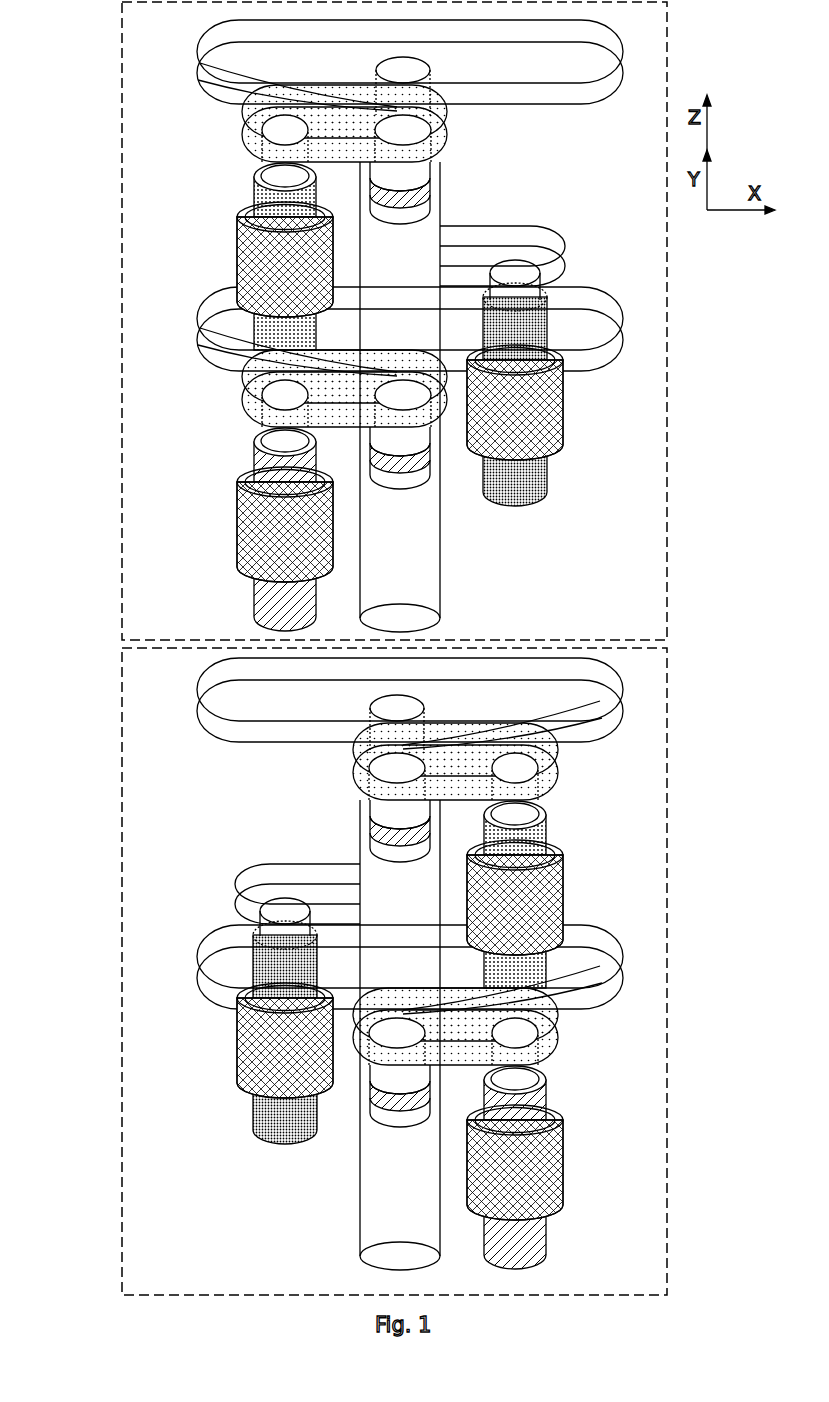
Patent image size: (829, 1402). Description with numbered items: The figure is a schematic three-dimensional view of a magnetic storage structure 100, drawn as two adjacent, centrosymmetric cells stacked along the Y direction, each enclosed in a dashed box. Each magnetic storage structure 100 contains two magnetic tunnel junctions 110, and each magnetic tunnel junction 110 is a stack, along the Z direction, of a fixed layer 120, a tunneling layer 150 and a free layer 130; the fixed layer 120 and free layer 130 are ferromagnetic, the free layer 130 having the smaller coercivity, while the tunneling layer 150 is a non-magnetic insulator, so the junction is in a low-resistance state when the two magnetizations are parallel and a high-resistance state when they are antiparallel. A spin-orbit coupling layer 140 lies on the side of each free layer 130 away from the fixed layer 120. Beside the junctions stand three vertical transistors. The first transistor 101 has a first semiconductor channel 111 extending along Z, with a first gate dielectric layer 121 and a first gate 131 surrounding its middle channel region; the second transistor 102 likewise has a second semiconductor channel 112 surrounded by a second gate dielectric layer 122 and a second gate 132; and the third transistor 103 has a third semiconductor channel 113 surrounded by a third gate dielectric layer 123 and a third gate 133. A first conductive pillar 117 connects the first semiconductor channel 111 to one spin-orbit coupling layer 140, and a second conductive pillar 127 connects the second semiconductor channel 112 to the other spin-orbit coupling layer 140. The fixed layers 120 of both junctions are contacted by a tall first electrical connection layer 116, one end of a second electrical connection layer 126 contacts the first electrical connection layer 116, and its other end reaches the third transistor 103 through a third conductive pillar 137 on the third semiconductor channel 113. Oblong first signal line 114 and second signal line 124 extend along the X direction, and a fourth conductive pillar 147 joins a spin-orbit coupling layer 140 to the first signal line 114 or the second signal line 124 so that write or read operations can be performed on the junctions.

The magnetic storage structure 100 is at (118, 760).
The first transistor 101 is at (372, 570).
The second transistor 102 is at (371, 848).
The third transistor 103 is at (427, 713).
The magnetic tunnel junction 110 is at (466, 615).
The first semiconductor channel 111 is at (268, 207).
The second semiconductor channel 112 is at (268, 588).
The third semiconductor channel 113 is at (540, 446).
The first signal line 114 is at (568, 62).
The first electrical connection layer 116 is at (413, 556).
The first conductive pillar 117 is at (266, 166).
The fixed layer 120 is at (437, 660).
The first gate dielectric layer 121 is at (256, 226).
The second gate dielectric layer 122 is at (258, 503).
The third gate dielectric layer 123 is at (528, 376).
The second signal line 124 is at (577, 330).
The second electrical connection layer 126 is at (512, 238).
The second conductive pillar 127 is at (272, 440).
The free layer 130 is at (412, 170).
The first gate 131 is at (255, 262).
The second gate 132 is at (257, 542).
The third gate 133 is at (528, 418).
The third conductive pillar 137 is at (520, 275).
The spin-orbit coupling layer 140 is at (440, 148).
The fourth conductive pillar 147 is at (238, 88).
The tunneling layer 150 is at (410, 190).